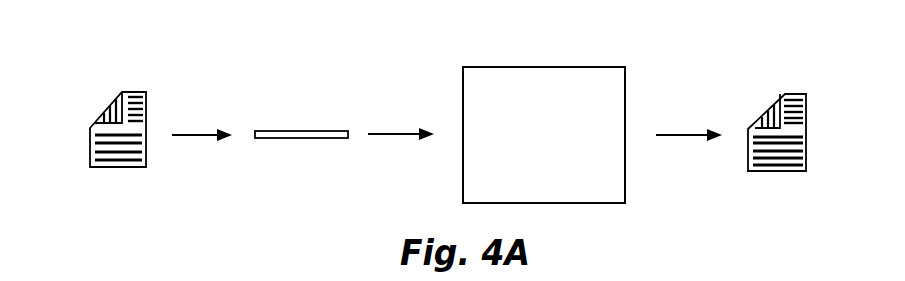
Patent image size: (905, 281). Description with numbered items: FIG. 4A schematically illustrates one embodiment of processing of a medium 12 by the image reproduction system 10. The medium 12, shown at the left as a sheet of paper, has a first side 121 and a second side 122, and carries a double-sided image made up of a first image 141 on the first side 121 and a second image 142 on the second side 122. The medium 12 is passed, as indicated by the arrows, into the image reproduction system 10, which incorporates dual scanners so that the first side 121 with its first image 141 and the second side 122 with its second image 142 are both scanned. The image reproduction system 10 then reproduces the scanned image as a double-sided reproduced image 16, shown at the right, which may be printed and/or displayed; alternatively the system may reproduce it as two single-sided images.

The medium 12 is at (87, 58).
The first side 121 is at (96, 167).
The second side 122 is at (102, 120).
The first image 141 is at (133, 161).
The second image 142 is at (110, 112).
The image reproduction system 10 is at (544, 135).
The double-sided reproduced image 16 is at (752, 95).